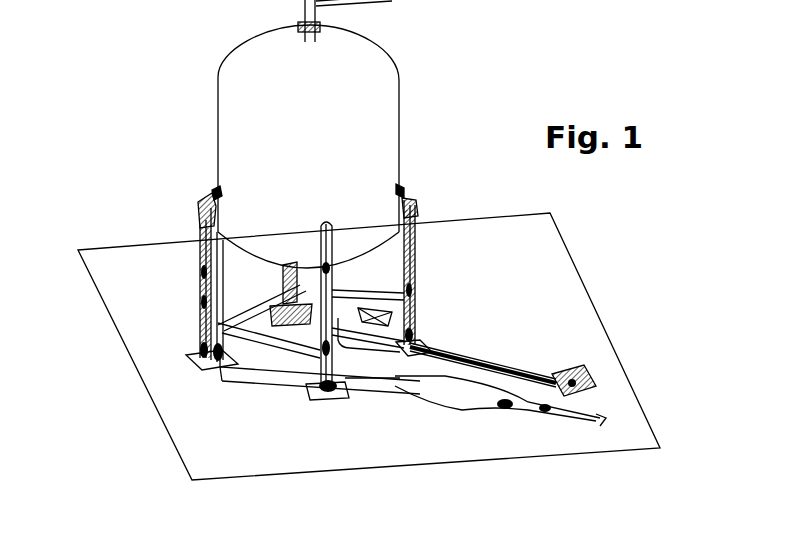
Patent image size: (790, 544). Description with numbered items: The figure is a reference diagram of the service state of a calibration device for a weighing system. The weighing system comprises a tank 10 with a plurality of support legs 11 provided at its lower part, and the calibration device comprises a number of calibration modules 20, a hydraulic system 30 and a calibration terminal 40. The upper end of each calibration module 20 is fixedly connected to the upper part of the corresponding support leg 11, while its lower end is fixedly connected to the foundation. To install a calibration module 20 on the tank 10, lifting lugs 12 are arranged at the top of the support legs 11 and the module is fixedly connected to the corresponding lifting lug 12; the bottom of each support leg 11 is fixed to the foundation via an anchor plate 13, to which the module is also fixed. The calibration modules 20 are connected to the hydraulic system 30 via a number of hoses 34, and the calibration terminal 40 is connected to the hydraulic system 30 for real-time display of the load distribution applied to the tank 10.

The tank 10 is at (380, 155).
The support leg 11 is at (218, 194).
The lifting lug 12 is at (206, 213).
The anchor plate 13 is at (315, 395).
The calibration module 20 is at (200, 262).
The hydraulic system 30 is at (518, 428).
The hose 34 is at (417, 393).
The calibration terminal 40 is at (585, 372).